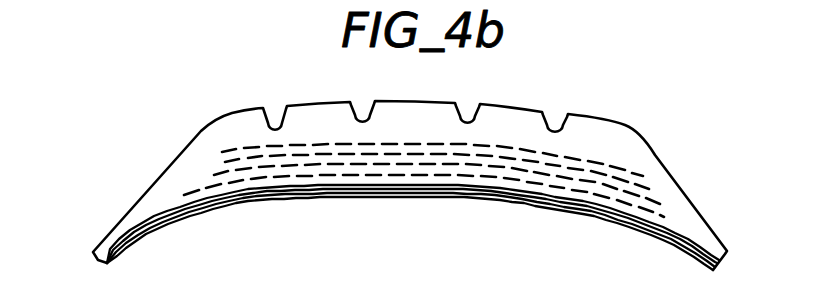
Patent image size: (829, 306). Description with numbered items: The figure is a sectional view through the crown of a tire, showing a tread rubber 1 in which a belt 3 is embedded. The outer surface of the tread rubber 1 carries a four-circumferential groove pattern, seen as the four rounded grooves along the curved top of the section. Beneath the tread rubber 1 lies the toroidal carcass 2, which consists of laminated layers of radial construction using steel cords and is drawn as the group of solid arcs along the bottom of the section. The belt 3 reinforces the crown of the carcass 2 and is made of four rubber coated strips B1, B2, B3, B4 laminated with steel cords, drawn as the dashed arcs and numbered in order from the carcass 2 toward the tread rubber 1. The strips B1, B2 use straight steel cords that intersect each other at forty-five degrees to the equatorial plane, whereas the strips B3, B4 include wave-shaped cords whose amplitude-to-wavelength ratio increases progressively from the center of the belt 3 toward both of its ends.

The tread rubber 1 is at (605, 133).
The toroidal carcass 2 is at (688, 237).
The belt 3 is at (387, 151).
The strip B1 is at (175, 198).
The strip B2 is at (186, 183).
The strip B3 is at (197, 169).
The strip B4 is at (208, 155).